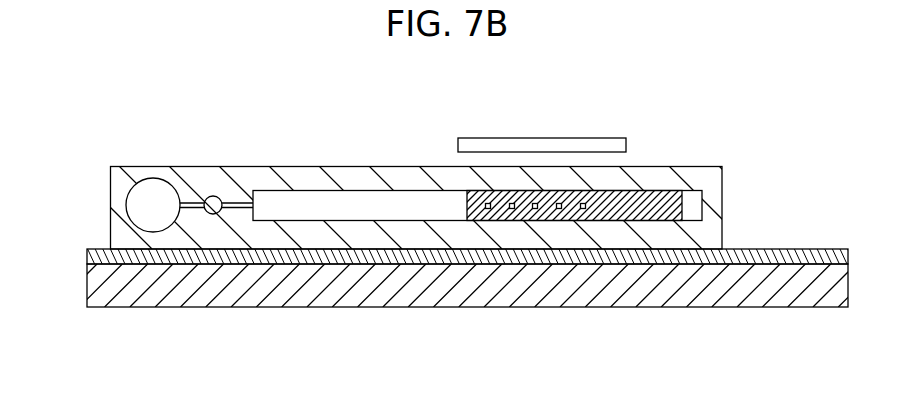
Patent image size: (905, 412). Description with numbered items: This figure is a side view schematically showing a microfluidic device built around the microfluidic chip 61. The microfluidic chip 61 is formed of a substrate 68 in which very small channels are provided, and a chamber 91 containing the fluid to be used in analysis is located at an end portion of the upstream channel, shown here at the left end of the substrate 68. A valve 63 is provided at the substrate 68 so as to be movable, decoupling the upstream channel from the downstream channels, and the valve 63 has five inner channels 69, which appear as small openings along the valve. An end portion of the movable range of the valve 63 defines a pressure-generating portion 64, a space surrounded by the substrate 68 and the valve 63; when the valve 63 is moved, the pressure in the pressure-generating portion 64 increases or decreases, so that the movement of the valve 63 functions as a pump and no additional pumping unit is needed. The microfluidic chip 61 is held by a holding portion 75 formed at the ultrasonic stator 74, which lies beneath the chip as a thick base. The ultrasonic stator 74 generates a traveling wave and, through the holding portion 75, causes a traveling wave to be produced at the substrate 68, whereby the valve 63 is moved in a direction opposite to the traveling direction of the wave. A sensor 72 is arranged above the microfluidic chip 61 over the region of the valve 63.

The microfluidic chip 61 is at (80, 170).
The valve 63 is at (662, 203).
The pressure-generating portion 64 is at (307, 197).
The substrate 68 is at (198, 175).
The inner channels 69 is at (488, 209).
The sensor 72 is at (535, 137).
The ultrasonic stator 74 is at (705, 275).
The holding portion 75 is at (800, 255).
The chamber 91 is at (153, 187).